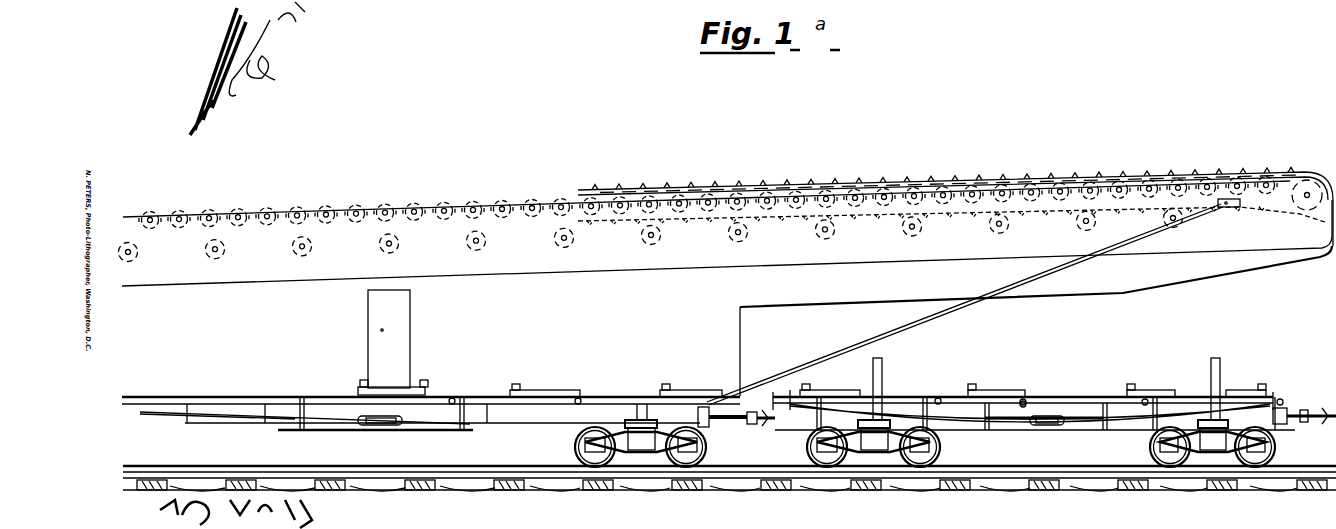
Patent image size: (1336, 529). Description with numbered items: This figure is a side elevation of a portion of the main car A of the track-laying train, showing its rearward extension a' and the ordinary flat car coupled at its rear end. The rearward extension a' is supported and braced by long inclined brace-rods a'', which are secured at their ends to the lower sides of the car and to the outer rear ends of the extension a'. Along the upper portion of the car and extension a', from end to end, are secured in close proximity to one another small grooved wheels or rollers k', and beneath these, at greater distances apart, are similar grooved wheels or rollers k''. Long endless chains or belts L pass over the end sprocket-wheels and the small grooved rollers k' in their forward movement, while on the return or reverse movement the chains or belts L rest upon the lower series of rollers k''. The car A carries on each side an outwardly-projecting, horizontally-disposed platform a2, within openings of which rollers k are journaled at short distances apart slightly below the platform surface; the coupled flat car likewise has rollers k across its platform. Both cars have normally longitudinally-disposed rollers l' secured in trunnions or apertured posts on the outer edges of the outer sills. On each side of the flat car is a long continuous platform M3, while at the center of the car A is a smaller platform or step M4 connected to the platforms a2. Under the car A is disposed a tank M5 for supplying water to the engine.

The main car A is at (727, 255).
The rearward extension a' is at (1036, 313).
The inclined brace-rods a'' is at (973, 302).
The platform a2 is at (612, 402).
The endless chains or belts L is at (868, 186).
The small grooved wheels or rollers k' is at (730, 180).
The lower grooved wheels or rollers k'' is at (660, 238).
The rollers k is at (879, 408).
The longitudinally-disposed rollers l' is at (834, 379).
The long continuous platform M3 is at (1016, 433).
The platform or step M4 is at (447, 430).
The tank M5 is at (536, 426).